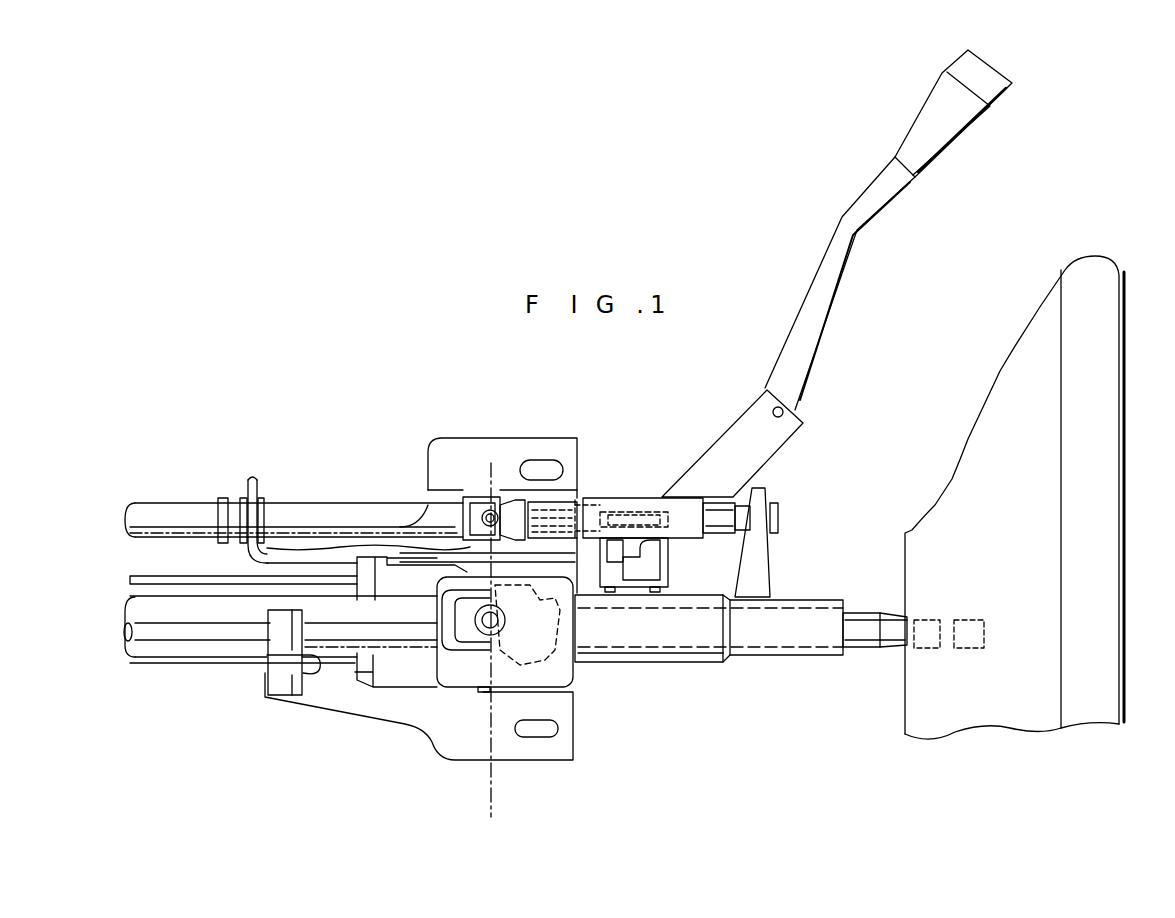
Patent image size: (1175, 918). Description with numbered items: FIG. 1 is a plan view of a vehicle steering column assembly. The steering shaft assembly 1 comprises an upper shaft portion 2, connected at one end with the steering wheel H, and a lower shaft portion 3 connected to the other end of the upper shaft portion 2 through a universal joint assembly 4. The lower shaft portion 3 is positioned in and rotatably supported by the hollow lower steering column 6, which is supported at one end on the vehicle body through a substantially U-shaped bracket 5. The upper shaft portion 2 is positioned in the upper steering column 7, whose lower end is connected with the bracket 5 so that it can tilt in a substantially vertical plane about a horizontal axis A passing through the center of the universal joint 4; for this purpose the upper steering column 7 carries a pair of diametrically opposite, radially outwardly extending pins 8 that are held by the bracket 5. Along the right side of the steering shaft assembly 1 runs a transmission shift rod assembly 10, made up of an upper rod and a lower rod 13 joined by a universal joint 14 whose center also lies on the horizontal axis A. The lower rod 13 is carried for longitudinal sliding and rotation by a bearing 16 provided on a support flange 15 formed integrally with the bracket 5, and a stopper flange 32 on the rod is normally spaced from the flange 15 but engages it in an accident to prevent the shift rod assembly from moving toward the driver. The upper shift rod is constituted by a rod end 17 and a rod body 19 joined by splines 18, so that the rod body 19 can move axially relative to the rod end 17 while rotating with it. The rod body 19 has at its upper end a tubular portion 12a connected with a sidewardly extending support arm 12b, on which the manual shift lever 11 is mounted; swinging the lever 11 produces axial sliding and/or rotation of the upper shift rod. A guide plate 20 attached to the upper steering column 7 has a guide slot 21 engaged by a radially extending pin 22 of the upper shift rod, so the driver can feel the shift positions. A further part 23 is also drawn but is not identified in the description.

The steering shaft assembly 1 is at (862, 584).
The upper shaft portion 2 is at (895, 612).
The lower shaft portion 3 is at (168, 633).
The universal joint assembly 4 is at (578, 670).
The U-shaped bracket 5 is at (575, 718).
The lower steering column 6 is at (223, 665).
The upper steering column 7 is at (788, 657).
The pins 8 is at (483, 688).
The transmission shift rod assembly 10 is at (587, 493).
The manual shift lever 11 is at (838, 255).
The tubular portion 12a is at (635, 498).
The support arm 12b is at (786, 452).
The lower rod 13 is at (377, 503).
The universal joint 14 is at (500, 503).
The support flange 15 is at (252, 493).
The bearing 16 is at (242, 493).
The rod end 17 is at (507, 517).
The splines 18 is at (527, 510).
The rod body 19 is at (610, 497).
The guide plate 20 is at (668, 577).
The guide slot 21 is at (625, 565).
The pin 22 is at (648, 543).
The support bracket 23 is at (755, 557).
The stopper flange 32 is at (218, 497).
The horizontal axis A is at (492, 773).
The steering wheel H is at (1125, 352).